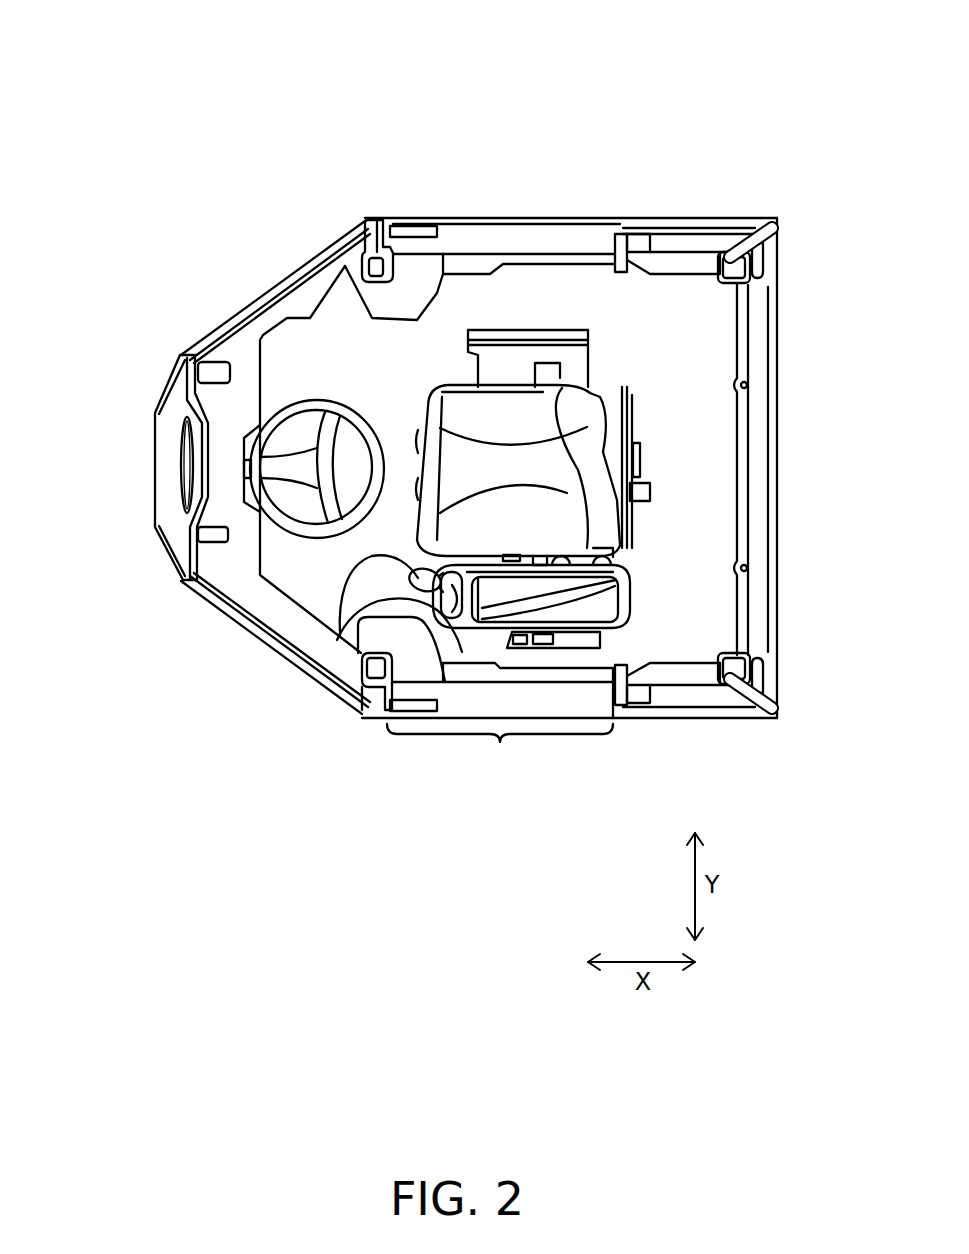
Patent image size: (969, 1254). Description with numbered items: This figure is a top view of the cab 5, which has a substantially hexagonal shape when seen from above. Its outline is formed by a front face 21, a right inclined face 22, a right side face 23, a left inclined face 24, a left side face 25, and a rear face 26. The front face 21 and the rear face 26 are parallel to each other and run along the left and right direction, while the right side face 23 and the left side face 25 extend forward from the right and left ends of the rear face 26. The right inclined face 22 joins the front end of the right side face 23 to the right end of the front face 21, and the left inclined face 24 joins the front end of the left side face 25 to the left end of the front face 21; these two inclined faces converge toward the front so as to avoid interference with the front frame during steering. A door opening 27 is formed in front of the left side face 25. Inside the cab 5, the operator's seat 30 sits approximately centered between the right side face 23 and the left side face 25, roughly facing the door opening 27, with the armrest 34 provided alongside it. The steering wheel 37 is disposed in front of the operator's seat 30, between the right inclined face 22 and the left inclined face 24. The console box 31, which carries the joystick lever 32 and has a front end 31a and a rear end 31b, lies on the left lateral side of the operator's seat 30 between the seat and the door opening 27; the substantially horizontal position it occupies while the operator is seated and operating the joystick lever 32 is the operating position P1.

The cab 5 is at (527, 73).
The front face 21 is at (152, 440).
The right inclined face 22 is at (272, 290).
The right side face 23 is at (500, 218).
The left inclined face 24 is at (232, 617).
The left side face 25 is at (628, 720).
The rear face 26 is at (775, 455).
The door opening 27 is at (500, 751).
The operator's seat 30 is at (505, 420).
The console box 31 is at (380, 683).
The front end 31a is at (360, 656).
The rear end 31b is at (632, 598).
The joystick lever 32 is at (350, 592).
The armrest 34 is at (630, 558).
The steering wheel 37 is at (297, 412).
The operating position P1 is at (598, 593).